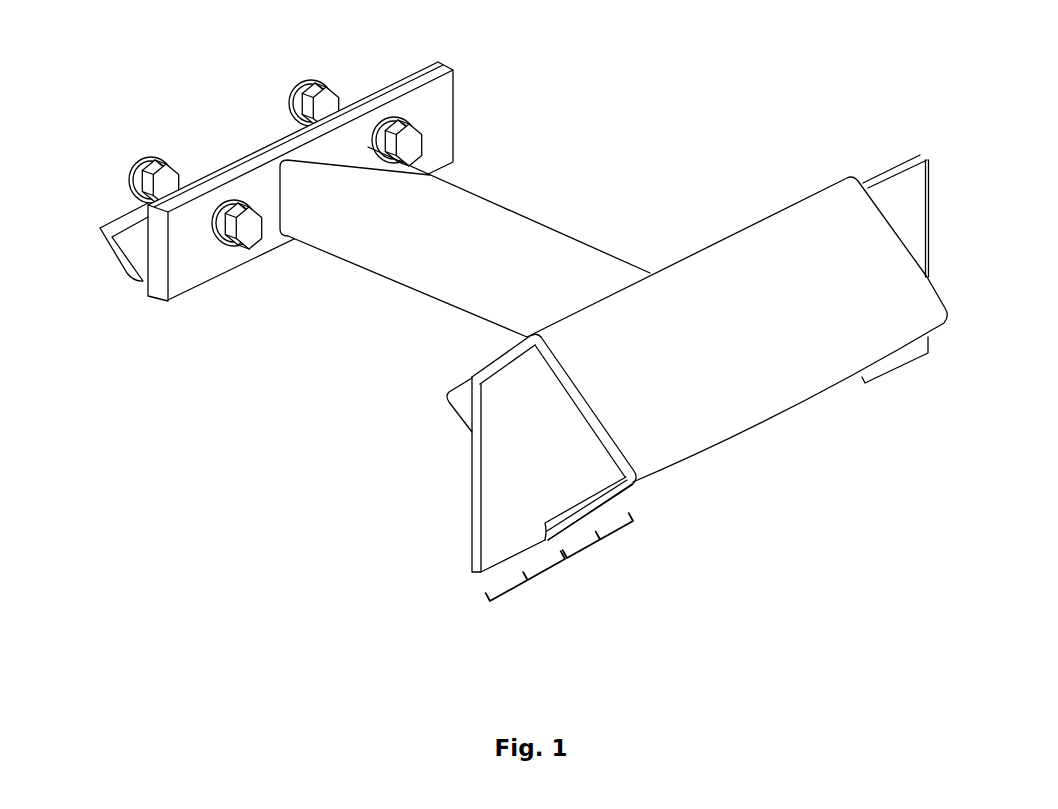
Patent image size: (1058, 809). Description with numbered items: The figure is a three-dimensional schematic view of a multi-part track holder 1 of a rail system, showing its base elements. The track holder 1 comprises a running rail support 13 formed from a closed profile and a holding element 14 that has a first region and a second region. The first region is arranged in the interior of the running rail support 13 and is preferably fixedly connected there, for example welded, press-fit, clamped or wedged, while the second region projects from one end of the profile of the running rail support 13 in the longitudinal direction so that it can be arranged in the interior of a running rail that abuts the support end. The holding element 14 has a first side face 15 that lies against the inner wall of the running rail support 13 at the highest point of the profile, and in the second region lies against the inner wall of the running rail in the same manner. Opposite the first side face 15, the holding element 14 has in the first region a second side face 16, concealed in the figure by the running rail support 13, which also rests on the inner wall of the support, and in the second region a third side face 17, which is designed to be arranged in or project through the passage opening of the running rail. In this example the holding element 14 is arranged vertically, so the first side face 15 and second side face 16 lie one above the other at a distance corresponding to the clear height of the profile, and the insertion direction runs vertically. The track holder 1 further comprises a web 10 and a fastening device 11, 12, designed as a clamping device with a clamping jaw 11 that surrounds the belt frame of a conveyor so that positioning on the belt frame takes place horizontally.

The track holder 1 is at (495, 330).
The web 10 is at (541, 249).
The clamping jaw 11 is at (185, 268).
The fastening device 12 is at (137, 250).
The running rail support 13 is at (727, 355).
The holding element 14 is at (548, 494).
The first side face 15 is at (490, 368).
The second side face 16 is at (545, 523).
The third side face 17 is at (474, 572).